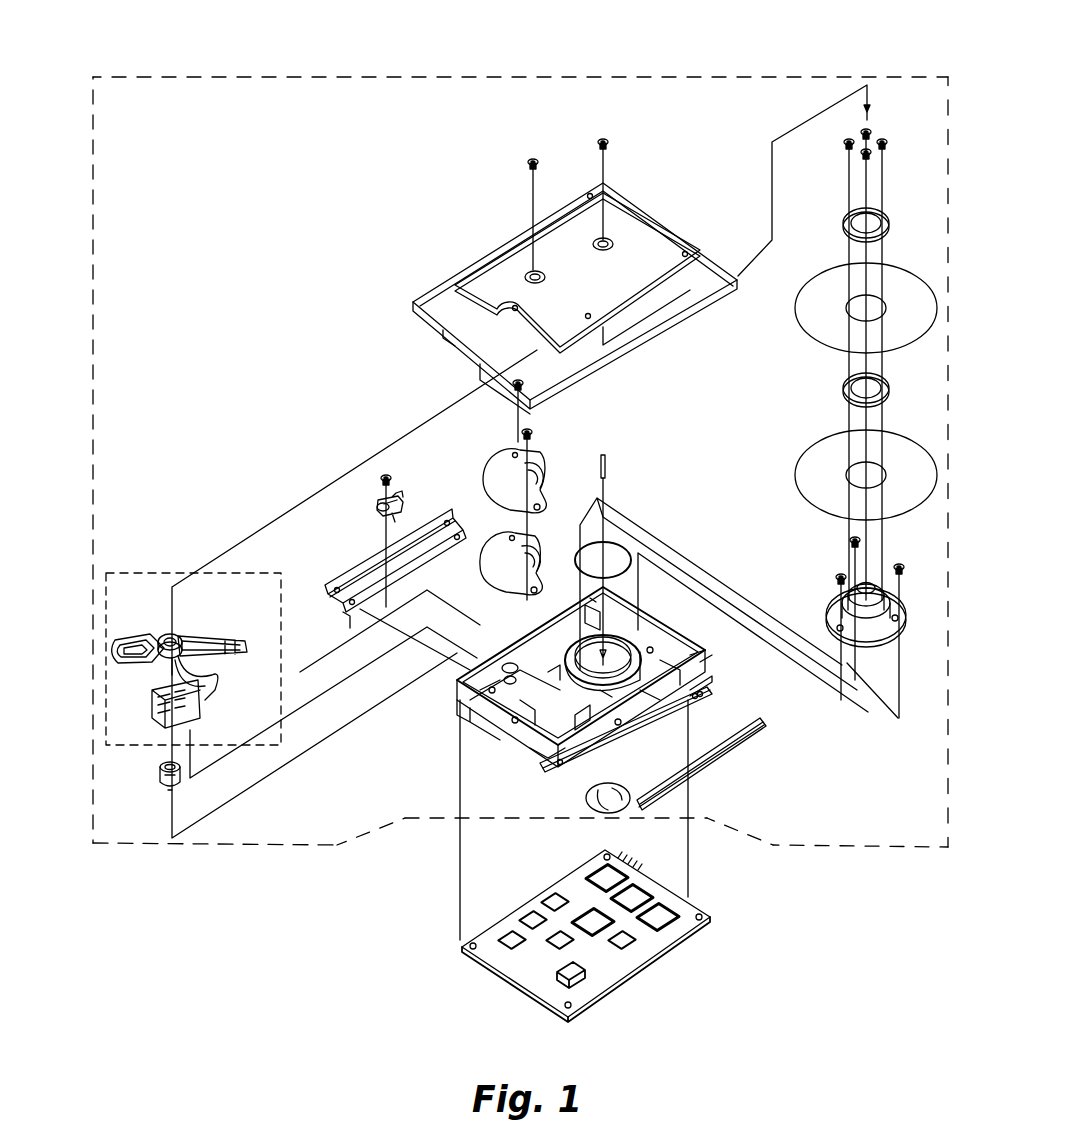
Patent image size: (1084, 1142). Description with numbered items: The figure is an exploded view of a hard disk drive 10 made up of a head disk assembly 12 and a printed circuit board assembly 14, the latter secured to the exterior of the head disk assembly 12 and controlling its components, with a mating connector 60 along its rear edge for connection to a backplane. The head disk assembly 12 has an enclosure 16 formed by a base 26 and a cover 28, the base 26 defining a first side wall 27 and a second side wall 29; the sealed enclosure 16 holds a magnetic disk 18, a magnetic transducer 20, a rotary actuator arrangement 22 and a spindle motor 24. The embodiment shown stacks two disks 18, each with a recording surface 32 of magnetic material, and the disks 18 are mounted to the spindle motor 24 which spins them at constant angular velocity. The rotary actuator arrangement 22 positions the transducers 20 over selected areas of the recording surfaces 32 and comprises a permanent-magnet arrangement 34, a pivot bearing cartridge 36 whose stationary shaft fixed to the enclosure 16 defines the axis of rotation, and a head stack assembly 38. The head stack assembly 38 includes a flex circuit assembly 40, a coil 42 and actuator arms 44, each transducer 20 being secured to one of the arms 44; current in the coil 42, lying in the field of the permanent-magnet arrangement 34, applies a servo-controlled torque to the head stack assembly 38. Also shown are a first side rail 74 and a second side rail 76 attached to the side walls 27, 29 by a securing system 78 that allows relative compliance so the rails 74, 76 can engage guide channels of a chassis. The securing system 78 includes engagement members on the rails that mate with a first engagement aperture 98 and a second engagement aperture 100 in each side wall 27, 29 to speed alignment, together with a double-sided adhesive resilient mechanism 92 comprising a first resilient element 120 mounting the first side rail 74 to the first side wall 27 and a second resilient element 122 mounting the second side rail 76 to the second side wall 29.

The hard disk drive 10 is at (382, 62).
The head disk assembly 12 is at (825, 850).
The printed circuit board assembly 14 is at (648, 970).
The enclosure 16 is at (457, 300).
The magnetic disk 18 is at (808, 440).
The magnetic transducer 20 is at (235, 642).
The rotary actuator arrangement 22 is at (470, 485).
The spindle motor 24 is at (832, 608).
The base 26 is at (712, 684).
The first side wall 27 is at (465, 688).
The cover 28 is at (488, 262).
The second side wall 29 is at (640, 733).
The recording surface 32 is at (822, 292).
The permanent-magnet arrangement 34 is at (520, 555).
The pivot bearing cartridge 36 is at (164, 780).
The head stack assembly 38 is at (133, 573).
The flex circuit assembly 40 is at (213, 673).
The coil 42 is at (148, 638).
The actuator arms 44 is at (195, 634).
The mating connector 60 is at (634, 866).
The first side rail 74 is at (366, 564).
The second side rail 76 is at (745, 728).
The securing system 78 is at (722, 778).
The double-sided adhesive resilient mechanism 92 is at (588, 772).
The first engagement aperture 98 is at (560, 760).
The second engagement aperture 100 is at (700, 660).
The first double-sided adhesive resilient element 120 is at (351, 620).
The second double-sided adhesive resilient element 122 is at (705, 692).